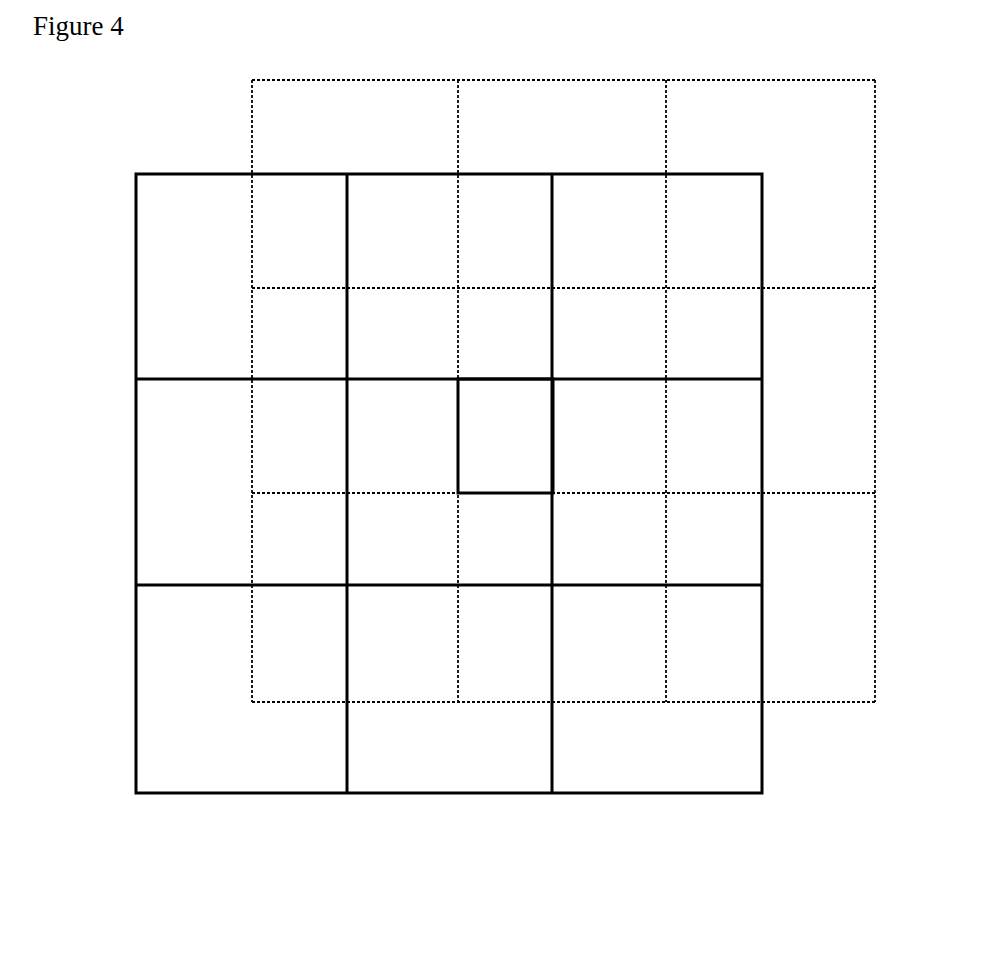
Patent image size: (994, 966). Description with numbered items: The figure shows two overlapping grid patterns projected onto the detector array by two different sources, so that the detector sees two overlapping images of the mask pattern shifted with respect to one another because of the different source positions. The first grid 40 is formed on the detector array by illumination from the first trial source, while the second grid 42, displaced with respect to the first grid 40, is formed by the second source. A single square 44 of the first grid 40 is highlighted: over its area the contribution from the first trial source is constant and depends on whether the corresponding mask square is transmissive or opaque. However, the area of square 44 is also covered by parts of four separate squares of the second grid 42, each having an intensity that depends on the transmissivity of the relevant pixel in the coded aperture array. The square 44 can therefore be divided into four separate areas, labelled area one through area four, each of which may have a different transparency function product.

The first grid 40 is at (160, 172).
The second grid 42 is at (408, 79).
The square 44 is at (345, 538).